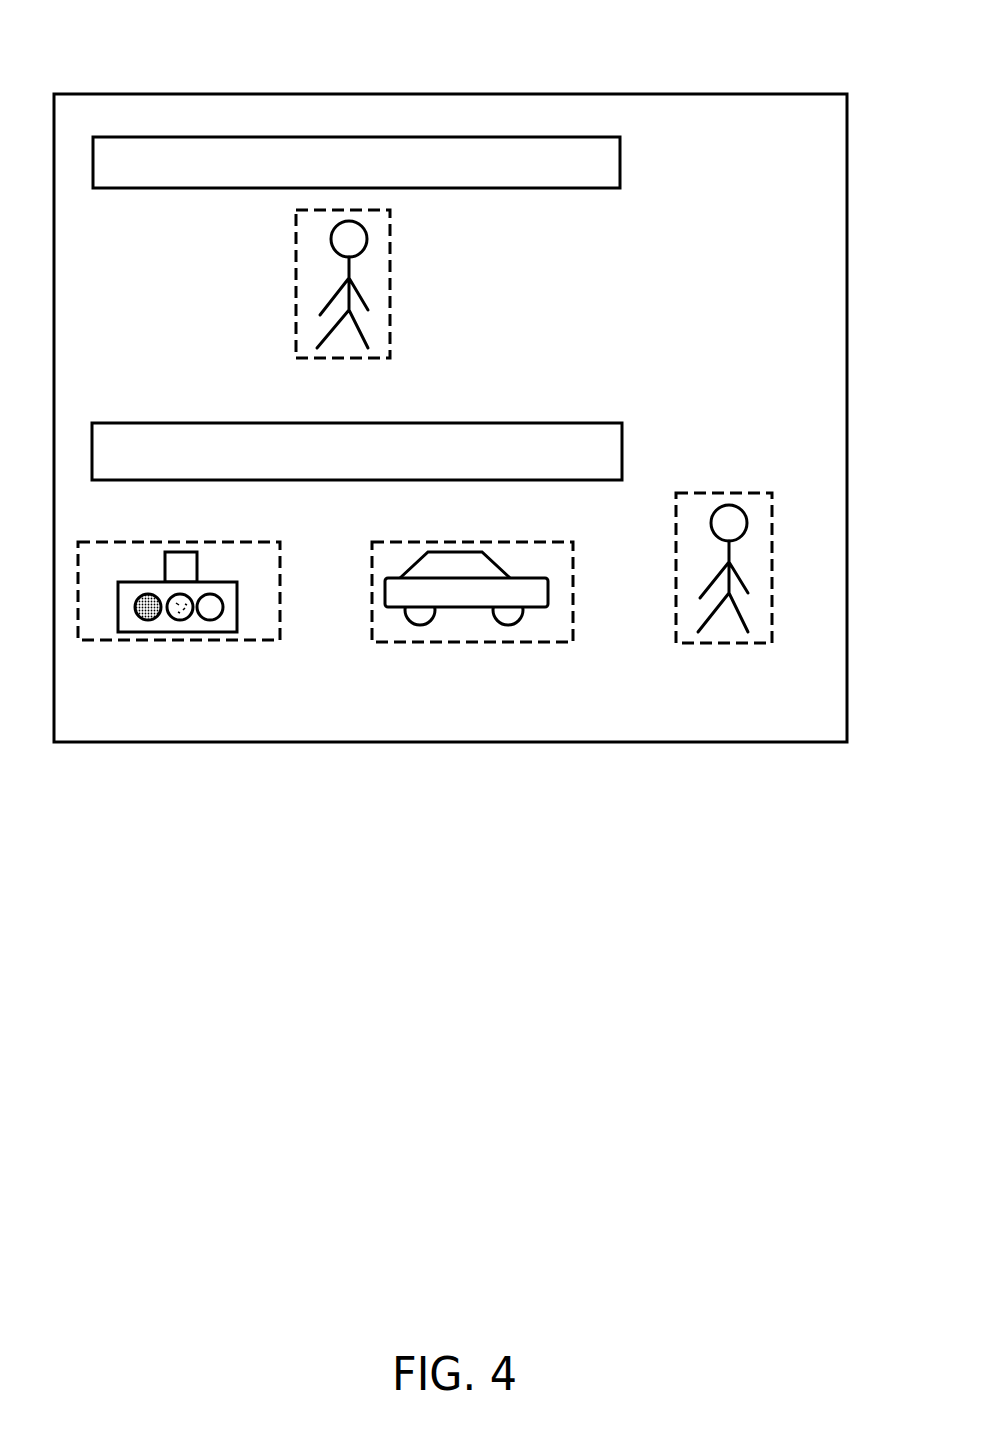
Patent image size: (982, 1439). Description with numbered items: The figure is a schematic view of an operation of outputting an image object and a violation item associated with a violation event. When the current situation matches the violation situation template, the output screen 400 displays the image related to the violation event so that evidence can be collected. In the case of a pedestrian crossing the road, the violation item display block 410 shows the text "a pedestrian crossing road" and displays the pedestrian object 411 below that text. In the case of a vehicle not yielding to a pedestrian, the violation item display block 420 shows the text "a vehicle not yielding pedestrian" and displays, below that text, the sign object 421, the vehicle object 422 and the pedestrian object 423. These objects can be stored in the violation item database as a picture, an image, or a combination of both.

The output screen 400 is at (423, 92).
The violation item display block 410 is at (620, 173).
The pedestrian object 411 is at (387, 297).
The violation item display block 420 is at (623, 445).
The sign object 421 is at (278, 597).
The vehicle object 422 is at (570, 598).
The pedestrian object 423 is at (768, 580).